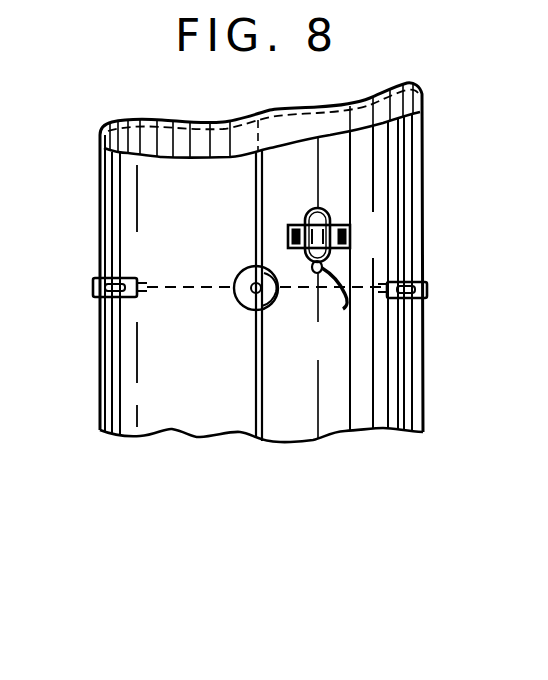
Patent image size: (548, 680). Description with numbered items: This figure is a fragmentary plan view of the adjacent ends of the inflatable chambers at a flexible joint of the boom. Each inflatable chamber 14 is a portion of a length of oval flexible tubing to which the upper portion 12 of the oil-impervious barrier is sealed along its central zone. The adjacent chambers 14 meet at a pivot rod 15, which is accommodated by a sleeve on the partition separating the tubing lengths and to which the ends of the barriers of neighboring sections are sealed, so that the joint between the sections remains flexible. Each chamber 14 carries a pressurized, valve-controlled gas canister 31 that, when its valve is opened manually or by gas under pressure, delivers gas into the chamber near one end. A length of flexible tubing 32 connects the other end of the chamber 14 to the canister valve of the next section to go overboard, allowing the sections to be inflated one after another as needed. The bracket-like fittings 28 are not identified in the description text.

The upper portion 12 is at (262, 402).
The inflatable chamber 14 is at (358, 415).
The pivot rod 15 is at (267, 300).
The mounting bracket 28 is at (115, 278).
The gas canister 31 is at (324, 208).
The flexible tubing 32 is at (330, 270).